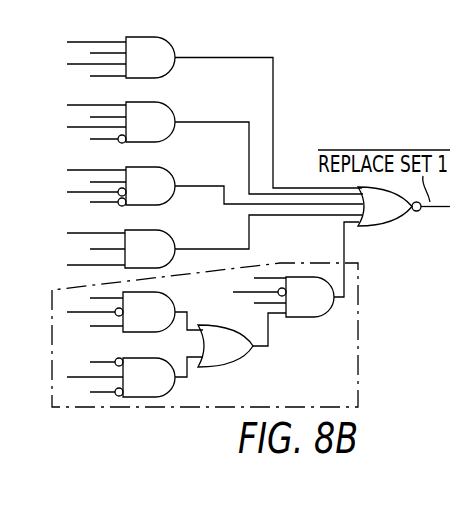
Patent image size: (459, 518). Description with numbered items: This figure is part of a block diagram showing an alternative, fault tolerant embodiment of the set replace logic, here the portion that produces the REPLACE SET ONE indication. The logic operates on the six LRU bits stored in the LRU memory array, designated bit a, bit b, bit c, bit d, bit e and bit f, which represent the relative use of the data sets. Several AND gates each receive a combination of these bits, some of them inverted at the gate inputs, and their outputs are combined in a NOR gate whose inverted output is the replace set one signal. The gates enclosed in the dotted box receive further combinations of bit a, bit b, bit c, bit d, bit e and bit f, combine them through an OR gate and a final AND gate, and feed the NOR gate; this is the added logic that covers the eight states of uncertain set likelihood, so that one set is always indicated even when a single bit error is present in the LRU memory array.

The bit a is at (172, 159).
The bit b is at (172, 171).
The bit c is at (172, 209).
The bit d is at (92, 243).
The bit e is at (92, 219).
The bit f is at (103, 233).